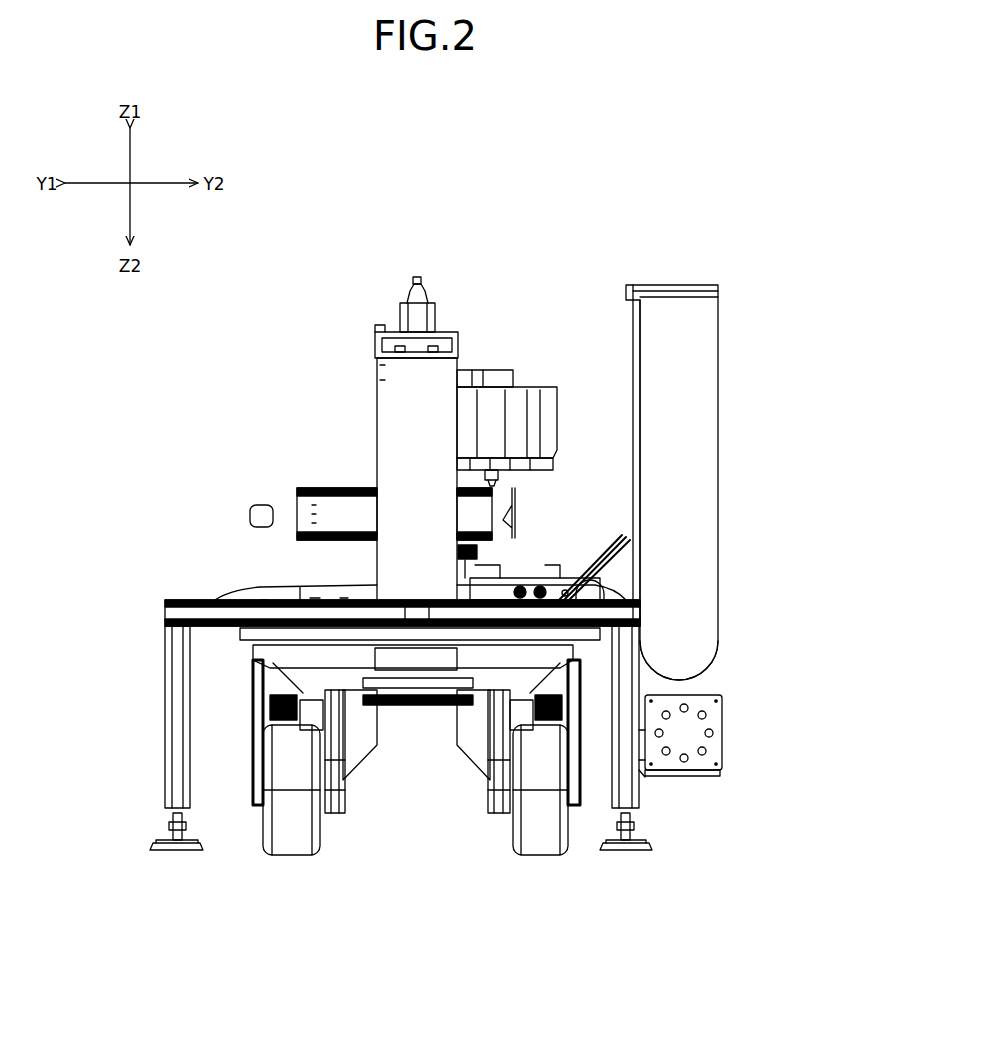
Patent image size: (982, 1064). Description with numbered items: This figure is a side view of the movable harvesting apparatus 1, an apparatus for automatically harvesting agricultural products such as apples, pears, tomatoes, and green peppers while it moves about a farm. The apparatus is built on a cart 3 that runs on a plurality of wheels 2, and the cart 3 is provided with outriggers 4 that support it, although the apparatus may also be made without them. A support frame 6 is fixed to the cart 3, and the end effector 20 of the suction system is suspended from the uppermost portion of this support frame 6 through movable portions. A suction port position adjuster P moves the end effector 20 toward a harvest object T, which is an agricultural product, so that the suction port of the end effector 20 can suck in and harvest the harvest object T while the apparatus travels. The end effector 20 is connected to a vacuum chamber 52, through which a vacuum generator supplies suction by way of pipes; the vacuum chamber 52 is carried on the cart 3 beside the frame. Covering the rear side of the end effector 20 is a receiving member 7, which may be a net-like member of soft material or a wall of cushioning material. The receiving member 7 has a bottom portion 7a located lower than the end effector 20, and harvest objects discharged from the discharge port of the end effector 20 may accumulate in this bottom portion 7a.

The movable harvesting apparatus 1 is at (550, 258).
The wheels 2 is at (262, 840).
The cart 3 is at (232, 683).
The outriggers 4 is at (190, 599).
The support frame 6 is at (447, 327).
The receiving member 7 is at (700, 362).
The bottom portion 7a is at (670, 680).
The end effector 20 is at (333, 487).
The vacuum chamber 52 is at (735, 748).
The suction port position adjuster P is at (491, 365).
The harvest object T is at (260, 503).